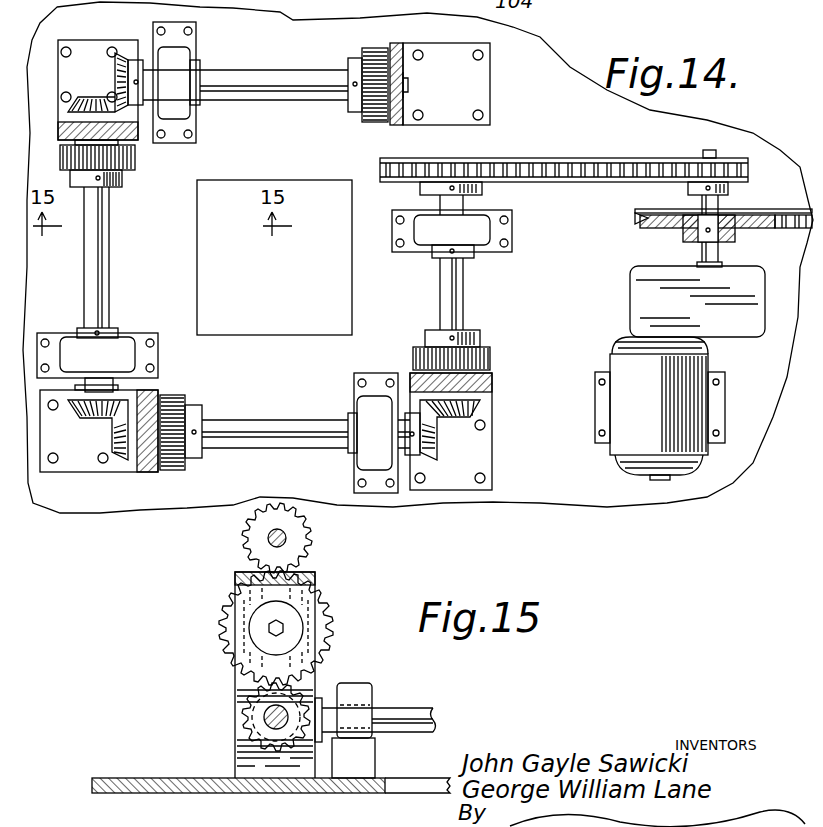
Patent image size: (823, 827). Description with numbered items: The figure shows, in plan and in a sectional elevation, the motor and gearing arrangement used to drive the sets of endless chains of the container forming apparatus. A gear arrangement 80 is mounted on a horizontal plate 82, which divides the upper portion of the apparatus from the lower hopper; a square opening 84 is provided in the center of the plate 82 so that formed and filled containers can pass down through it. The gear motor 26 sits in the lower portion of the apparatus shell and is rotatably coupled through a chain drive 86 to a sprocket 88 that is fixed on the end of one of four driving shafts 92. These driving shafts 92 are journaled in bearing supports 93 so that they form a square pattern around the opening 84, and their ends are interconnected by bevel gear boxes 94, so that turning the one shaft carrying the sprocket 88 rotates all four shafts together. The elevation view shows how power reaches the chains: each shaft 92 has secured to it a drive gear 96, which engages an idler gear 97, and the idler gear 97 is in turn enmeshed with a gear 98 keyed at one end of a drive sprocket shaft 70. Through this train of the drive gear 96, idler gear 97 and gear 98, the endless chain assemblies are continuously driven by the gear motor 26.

In FIG. 14, the gear motor 26 is at (690, 368).
In FIG. 15, the drive sprocket shaft 70 is at (290, 537).
In FIG. 14, the gear arrangement 80 is at (518, 90).
In FIG. 14, the horizontal plate 82 is at (670, 263).
In FIG. 14, the square opening 84 is at (330, 328).
In FIG. 14, the chain drive 86 is at (583, 152).
In FIG. 14, the sprocket 88 is at (487, 160).
In FIG. 14, the driving shaft 92 is at (278, 96).
In FIG. 15, the driving shaft 92 is at (425, 712).
In FIG. 14, the bearing support 93 is at (183, 112).
In FIG. 15, the bearing support 93 is at (360, 692).
In FIG. 14, the bevel gear box 94 is at (90, 48).
In FIG. 14, the drive gear 96 is at (372, 122).
In FIG. 15, the drive gear 96 is at (245, 728).
In FIG. 15, the idler gear 97 is at (228, 655).
In FIG. 15, the gear 98 is at (245, 548).